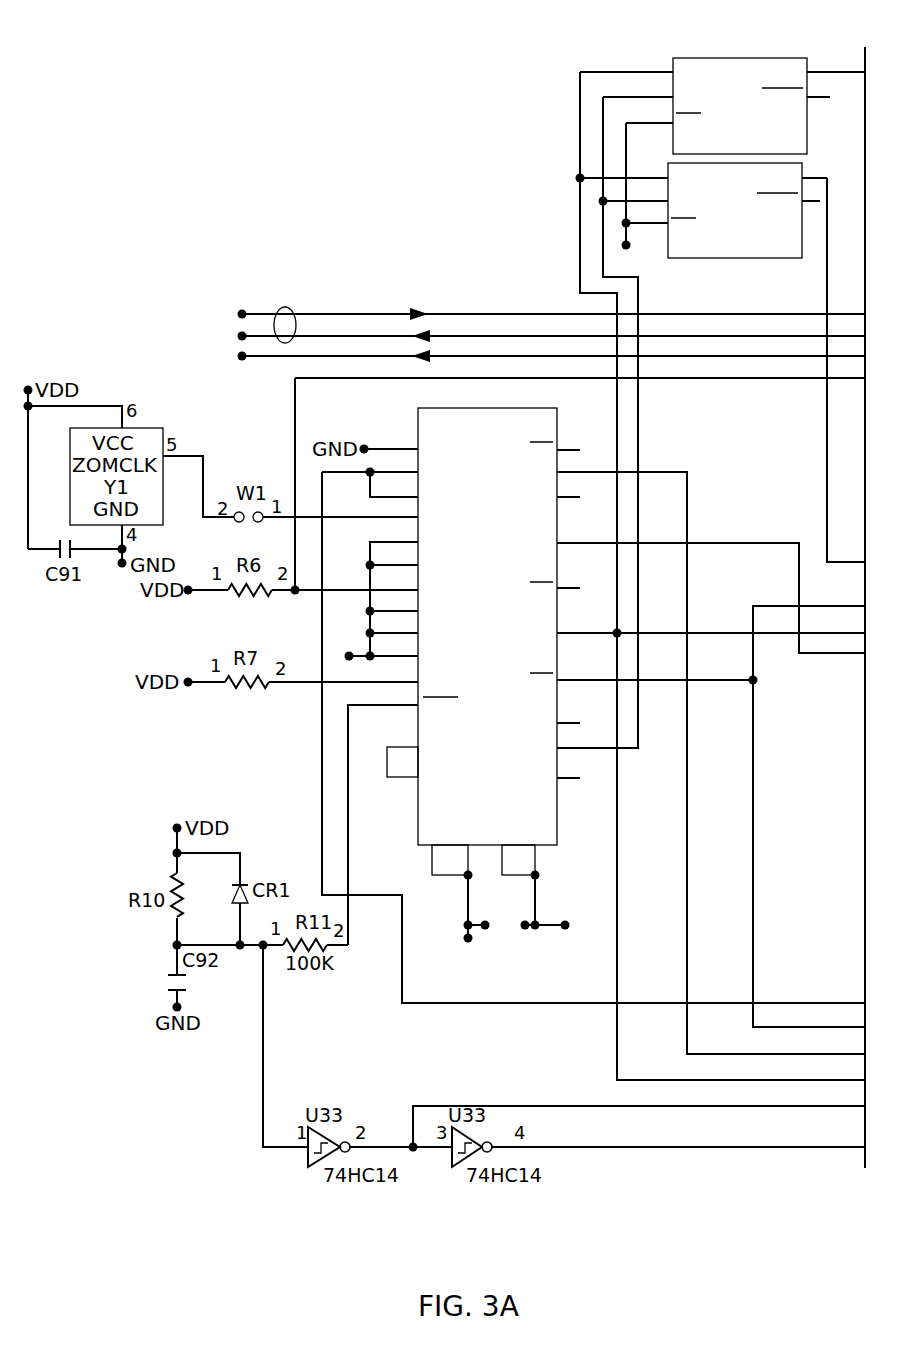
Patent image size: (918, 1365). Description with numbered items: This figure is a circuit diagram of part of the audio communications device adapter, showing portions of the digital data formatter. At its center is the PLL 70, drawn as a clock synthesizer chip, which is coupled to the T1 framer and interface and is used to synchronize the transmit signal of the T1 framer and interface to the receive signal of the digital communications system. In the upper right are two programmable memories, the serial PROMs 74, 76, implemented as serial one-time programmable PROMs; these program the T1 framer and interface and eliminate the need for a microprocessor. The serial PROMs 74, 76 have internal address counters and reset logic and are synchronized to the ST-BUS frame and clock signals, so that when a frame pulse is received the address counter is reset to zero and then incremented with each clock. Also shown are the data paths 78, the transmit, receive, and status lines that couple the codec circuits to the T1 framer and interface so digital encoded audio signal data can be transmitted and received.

The PLL 70 is at (418, 718).
The programmable memory 74 is at (723, 58).
The serial PROM 76 is at (743, 258).
The data paths 78 is at (290, 307).